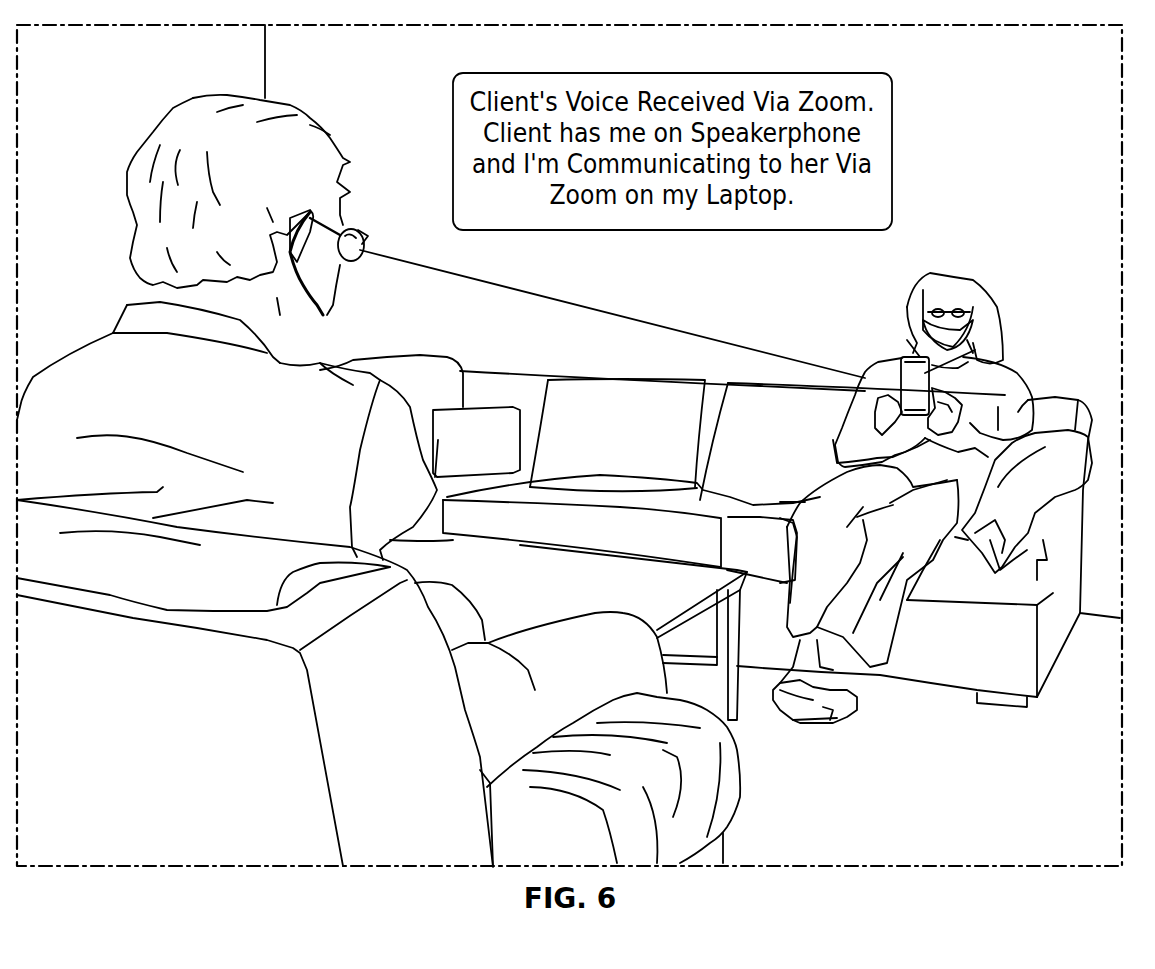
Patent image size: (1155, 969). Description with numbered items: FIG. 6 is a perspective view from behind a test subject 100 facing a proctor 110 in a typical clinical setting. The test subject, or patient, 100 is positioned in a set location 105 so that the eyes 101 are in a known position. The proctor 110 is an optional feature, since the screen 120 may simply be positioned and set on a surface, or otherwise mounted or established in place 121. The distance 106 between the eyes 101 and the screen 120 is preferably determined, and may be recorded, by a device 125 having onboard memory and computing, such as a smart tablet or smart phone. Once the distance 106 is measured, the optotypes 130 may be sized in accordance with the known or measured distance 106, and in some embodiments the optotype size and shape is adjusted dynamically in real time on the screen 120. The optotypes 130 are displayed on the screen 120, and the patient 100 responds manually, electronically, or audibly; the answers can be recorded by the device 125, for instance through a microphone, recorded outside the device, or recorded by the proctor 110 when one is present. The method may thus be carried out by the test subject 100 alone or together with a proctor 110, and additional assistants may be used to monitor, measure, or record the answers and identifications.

The test subject 100 is at (135, 235).
The set location 105 is at (368, 236).
The eyes 101 is at (360, 252).
The distance 106 is at (610, 318).
The proctor 110 is at (945, 273).
The device 125 is at (893, 358).
The screen 120 is at (870, 372).
The optotypes 130 is at (975, 350).
The place 121 is at (1030, 387).